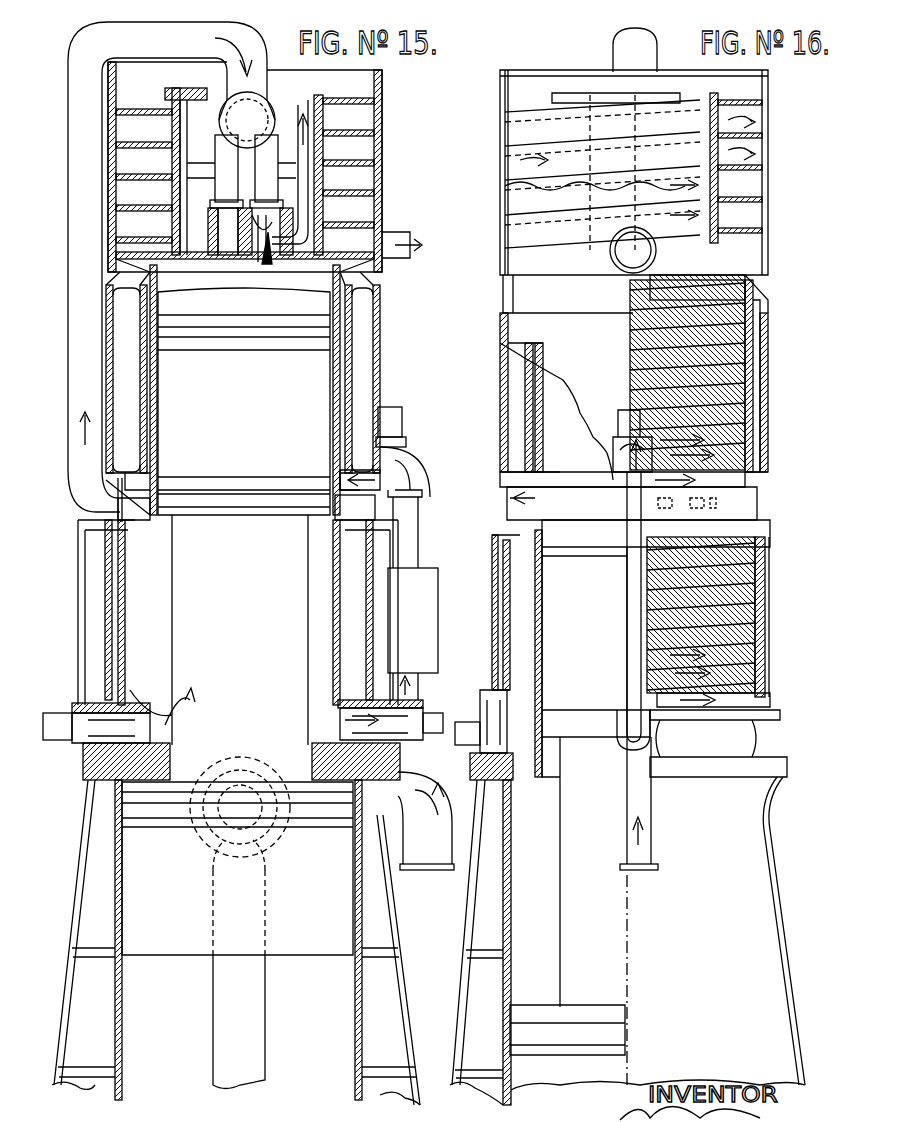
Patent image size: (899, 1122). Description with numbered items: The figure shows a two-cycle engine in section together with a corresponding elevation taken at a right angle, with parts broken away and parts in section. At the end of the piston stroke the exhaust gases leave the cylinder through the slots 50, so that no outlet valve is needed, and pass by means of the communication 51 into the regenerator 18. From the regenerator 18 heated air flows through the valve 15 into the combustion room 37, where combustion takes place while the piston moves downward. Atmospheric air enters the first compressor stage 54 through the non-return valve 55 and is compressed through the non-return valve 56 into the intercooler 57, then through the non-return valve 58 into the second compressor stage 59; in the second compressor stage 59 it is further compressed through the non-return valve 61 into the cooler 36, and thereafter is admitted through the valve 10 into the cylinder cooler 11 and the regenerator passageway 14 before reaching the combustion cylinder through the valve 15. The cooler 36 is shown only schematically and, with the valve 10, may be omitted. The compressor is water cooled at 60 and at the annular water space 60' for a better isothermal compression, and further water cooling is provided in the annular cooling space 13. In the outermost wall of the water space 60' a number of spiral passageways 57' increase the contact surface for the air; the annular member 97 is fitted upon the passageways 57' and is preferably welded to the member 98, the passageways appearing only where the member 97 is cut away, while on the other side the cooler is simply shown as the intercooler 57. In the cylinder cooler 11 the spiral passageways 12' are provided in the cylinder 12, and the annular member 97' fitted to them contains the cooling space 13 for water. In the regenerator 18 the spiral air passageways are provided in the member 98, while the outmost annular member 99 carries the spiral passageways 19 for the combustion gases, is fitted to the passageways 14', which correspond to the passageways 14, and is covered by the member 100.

In FIG. 15, the regenerator 18 is at (500, 100).
In FIG. 15, the member carrying the spiral air passageways 98 is at (318, 152).
In FIG. 16, the member carrying the spiral air passageways 98 is at (503, 572).
In FIG. 15, the regenerator passageway 14 is at (313, 150).
In FIG. 15, the valve 15 is at (268, 232).
In FIG. 15, the combustion room 37 is at (245, 277).
In FIG. 15, the annular cooling space 13 is at (362, 333).
In FIG. 16, the annular cooling space 13 is at (748, 333).
In FIG. 15, the cylinder cooler 11 is at (342, 386).
In FIG. 15, the valve 10 is at (398, 432).
In FIG. 15, the communication 51 is at (76, 378).
In FIG. 15, the slots 50 is at (130, 500).
In FIG. 16, the slots 50 is at (528, 507).
In FIG. 15, the annular water space 60' is at (214, 612).
In FIG. 16, the annular water space 60' is at (553, 777).
In FIG. 15, the intercooler 57 is at (201, 612).
In FIG. 16, the intercooler 57 is at (497, 653).
In FIG. 15, the second compressor stage 59 is at (165, 643).
In FIG. 15, the non-return valve 58 is at (95, 728).
In FIG. 15, the water cooling 60 is at (230, 931).
In FIG. 15, the cooler 36 is at (420, 602).
In FIG. 15, the non-return valve 61 is at (392, 722).
In FIG. 15, the non-return valve 55 is at (385, 793).
In FIG. 16, the outmost annular member 99 is at (702, 100).
In FIG. 16, the spiral passageways 19 is at (520, 159).
In FIG. 16, the passageways 14' is at (717, 183).
In FIG. 16, the member 100 is at (766, 242).
In FIG. 16, the spiral passageways 12' is at (729, 375).
In FIG. 16, the annular member 97' is at (780, 392).
In FIG. 16, the cylinder 12 is at (529, 396).
In FIG. 16, the spiral passageways 57' is at (730, 622).
In FIG. 16, the annular member 97 is at (782, 617).
In FIG. 16, the non-return valve 56 is at (497, 740).
In FIG. 16, the first compressor stage 54 is at (537, 877).